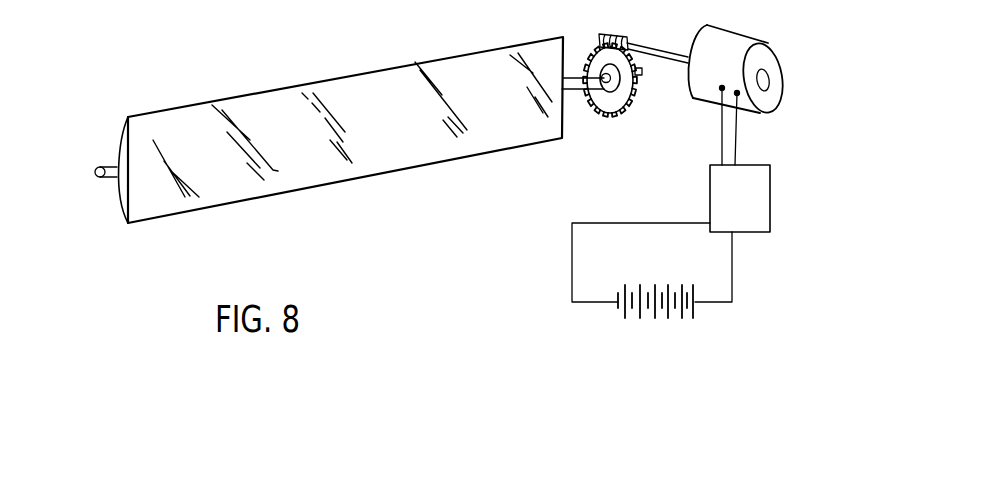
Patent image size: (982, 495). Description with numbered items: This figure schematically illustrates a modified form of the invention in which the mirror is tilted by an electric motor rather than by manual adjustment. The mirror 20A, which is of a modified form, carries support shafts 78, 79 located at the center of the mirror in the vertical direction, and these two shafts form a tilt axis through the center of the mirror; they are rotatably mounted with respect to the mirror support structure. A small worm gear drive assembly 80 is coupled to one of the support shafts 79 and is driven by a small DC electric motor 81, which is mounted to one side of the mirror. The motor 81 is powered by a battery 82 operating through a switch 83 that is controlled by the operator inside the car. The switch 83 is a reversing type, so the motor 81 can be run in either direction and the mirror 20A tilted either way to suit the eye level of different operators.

The mirror 20A is at (310, 163).
The support shaft 78 is at (102, 174).
The support shaft 79 is at (579, 87).
The worm gear drive assembly 80 is at (648, 80).
The DC electric motor 81 is at (770, 100).
The battery 82 is at (648, 318).
The switch 83 is at (772, 196).